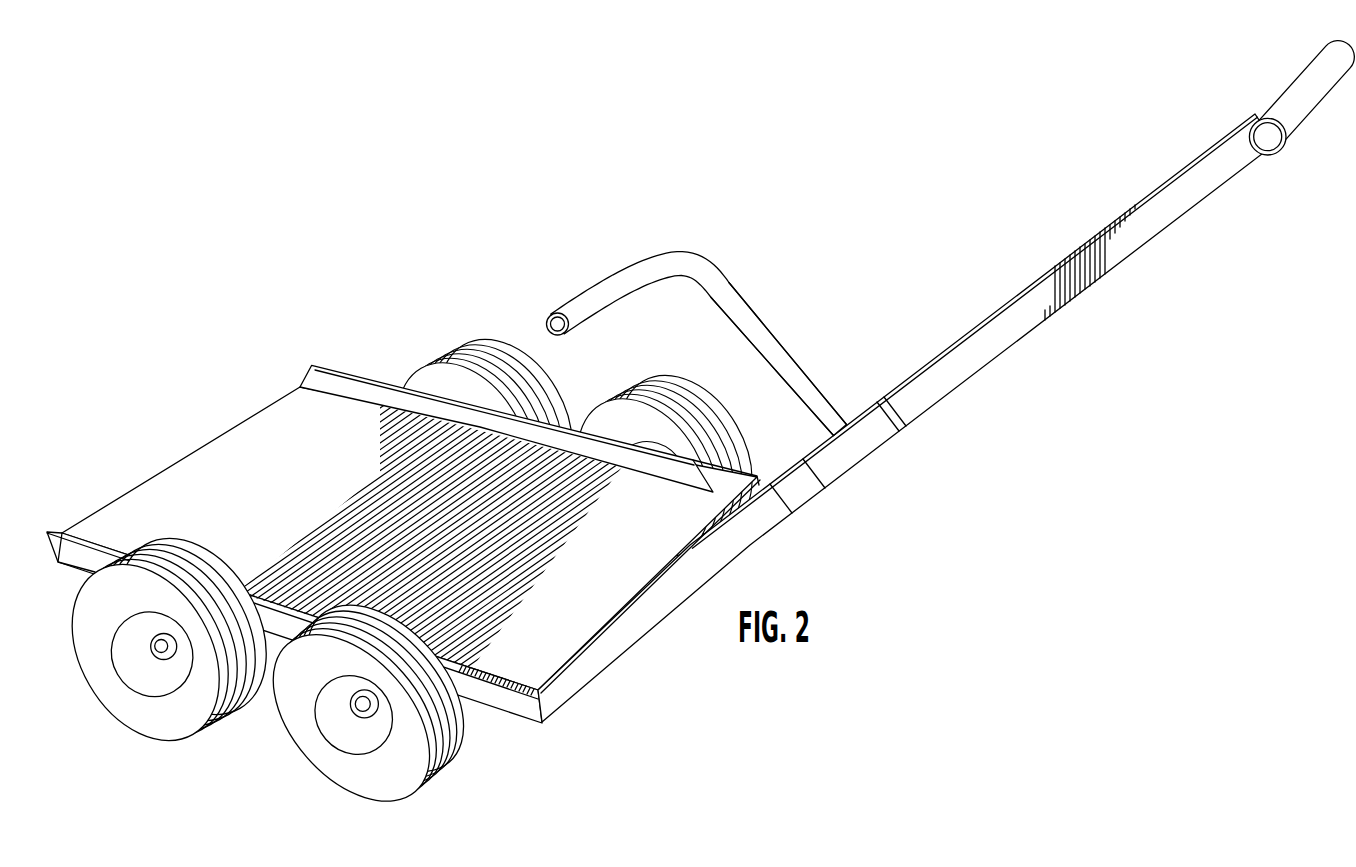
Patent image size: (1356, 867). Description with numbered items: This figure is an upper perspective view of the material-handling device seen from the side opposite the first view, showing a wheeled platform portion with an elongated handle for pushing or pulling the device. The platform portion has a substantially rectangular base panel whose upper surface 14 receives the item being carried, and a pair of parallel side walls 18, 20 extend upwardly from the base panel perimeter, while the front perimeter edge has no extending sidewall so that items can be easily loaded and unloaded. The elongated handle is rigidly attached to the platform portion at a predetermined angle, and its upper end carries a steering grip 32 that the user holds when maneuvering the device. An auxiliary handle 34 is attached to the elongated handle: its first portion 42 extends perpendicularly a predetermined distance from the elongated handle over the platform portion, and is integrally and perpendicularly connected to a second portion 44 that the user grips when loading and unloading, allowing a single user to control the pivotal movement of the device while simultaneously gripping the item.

The upper surface 14 is at (289, 498).
The side wall 18 is at (362, 388).
The side wall 20 is at (50, 531).
The steering grip 32 is at (1317, 93).
The auxiliary handle 34 is at (696, 307).
The first portion 42 is at (789, 352).
The second portion 44 is at (599, 284).